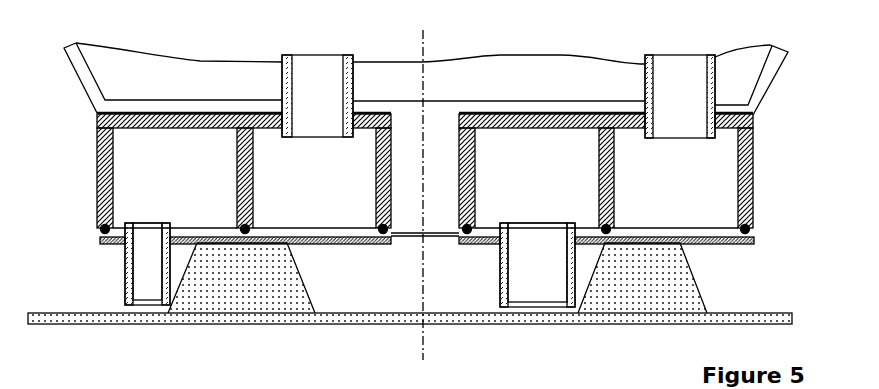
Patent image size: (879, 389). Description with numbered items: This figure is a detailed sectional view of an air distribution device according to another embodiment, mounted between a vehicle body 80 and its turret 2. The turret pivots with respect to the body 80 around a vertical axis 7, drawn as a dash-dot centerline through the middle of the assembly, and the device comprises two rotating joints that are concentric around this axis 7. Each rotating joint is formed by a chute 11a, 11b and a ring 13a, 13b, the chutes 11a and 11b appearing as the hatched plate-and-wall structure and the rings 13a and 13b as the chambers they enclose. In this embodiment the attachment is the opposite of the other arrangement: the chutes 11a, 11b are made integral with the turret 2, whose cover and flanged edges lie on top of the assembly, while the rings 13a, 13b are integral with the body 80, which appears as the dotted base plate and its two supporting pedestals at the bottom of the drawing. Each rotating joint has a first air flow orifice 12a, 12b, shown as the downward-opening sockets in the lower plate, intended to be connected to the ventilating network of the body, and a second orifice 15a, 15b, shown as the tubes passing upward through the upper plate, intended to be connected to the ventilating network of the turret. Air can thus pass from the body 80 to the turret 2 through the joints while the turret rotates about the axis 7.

The turret 2 is at (753, 72).
The vertical axis 7 is at (421, 97).
The chute 11a is at (138, 112).
The chute 11b is at (527, 118).
The first air flow orifice 12a is at (125, 273).
The first air flow orifice 12b is at (540, 280).
The ring 13a is at (210, 228).
The ring 13b is at (280, 228).
The second orifice 15a is at (670, 99).
The second orifice 15b is at (325, 87).
The body 80 is at (235, 307).